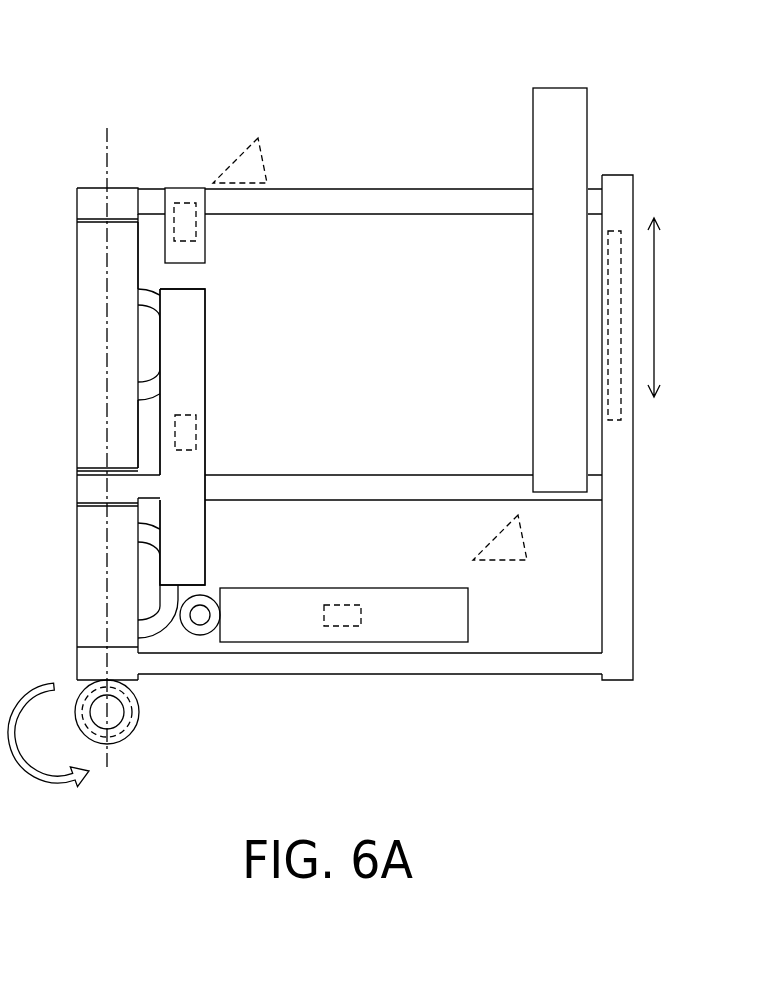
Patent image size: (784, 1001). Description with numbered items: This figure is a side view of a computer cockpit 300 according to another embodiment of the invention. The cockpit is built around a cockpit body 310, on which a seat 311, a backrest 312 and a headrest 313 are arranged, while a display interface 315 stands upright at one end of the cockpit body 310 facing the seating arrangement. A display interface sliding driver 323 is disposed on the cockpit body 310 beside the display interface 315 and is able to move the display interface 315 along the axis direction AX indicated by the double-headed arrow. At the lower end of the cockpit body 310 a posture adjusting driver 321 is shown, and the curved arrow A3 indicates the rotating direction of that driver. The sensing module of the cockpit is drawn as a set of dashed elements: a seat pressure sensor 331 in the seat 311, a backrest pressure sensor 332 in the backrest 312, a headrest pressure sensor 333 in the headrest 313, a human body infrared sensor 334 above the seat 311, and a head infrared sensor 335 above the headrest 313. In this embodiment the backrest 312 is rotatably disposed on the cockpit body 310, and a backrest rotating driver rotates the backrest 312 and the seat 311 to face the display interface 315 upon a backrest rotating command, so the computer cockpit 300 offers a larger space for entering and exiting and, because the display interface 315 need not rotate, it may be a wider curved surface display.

The computer cockpit 300 is at (200, 67).
The cockpit body 310 is at (396, 387).
The seat 311 is at (385, 659).
The backrest 312 is at (256, 437).
The headrest 313 is at (209, 179).
The display interface 315 is at (558, 108).
The display interface sliding driver 323 is at (617, 231).
The posture adjusting driver 321 is at (130, 718).
The seat pressure sensor 331 is at (351, 626).
The backrest pressure sensor 332 is at (196, 427).
The headrest pressure sensor 333 is at (180, 203).
The human body infrared sensor 334 is at (527, 548).
The head infrared sensor 335 is at (264, 162).
The axis direction AX is at (670, 307).
The rotation direction A3 is at (107, 757).